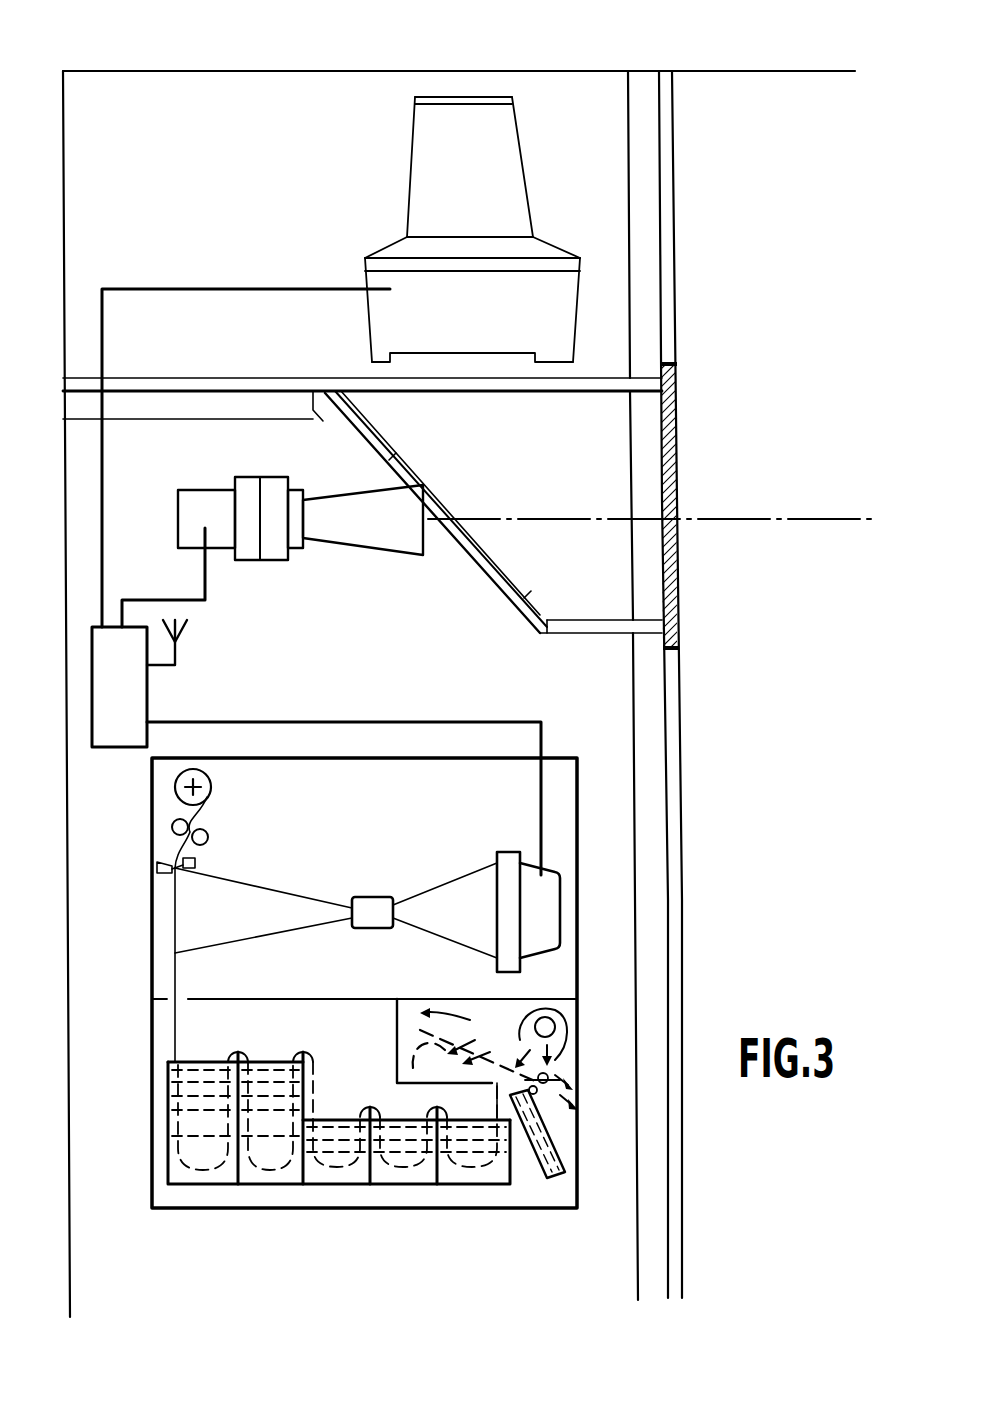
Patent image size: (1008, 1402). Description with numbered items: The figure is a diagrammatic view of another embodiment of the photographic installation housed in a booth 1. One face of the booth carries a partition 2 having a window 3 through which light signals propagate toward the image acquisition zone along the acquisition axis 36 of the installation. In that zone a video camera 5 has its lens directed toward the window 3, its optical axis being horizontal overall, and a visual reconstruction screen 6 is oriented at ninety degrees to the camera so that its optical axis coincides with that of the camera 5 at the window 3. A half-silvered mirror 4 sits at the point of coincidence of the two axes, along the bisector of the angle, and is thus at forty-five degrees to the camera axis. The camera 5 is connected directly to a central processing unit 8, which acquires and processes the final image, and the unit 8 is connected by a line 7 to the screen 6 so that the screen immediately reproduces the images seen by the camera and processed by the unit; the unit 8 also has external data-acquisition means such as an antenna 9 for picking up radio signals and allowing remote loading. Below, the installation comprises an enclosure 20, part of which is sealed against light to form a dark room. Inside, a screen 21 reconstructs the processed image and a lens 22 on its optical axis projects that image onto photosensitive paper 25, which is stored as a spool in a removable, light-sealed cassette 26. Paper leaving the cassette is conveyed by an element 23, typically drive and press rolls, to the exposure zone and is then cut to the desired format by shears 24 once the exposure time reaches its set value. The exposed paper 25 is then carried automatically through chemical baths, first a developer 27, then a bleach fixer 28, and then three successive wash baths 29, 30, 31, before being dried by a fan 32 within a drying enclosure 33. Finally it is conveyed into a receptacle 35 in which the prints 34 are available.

The booth 1 is at (787, 71).
The partition 2 is at (675, 898).
The window 3 is at (672, 460).
The half-silvered mirror 4 is at (520, 580).
The video camera 5 is at (208, 505).
The visual reconstruction screen 6 is at (432, 170).
The line 7 is at (277, 289).
The central processing unit 8 is at (152, 690).
The antenna 9 is at (183, 650).
The enclosure 20 is at (297, 1212).
The screen 21 is at (545, 920).
The lens 22 is at (373, 907).
The conveying element 23 is at (213, 836).
The shears 24 is at (212, 867).
The photosensitive paper 25 is at (175, 927).
The cassette 26 is at (178, 798).
The developer 27 is at (188, 1185).
The bleach fixer 28 is at (255, 1185).
The wash bath 29 is at (357, 1185).
The wash bath 30 is at (390, 1185).
The wash bath 31 is at (497, 1185).
The fan 32 is at (575, 1020).
The drying enclosure 33 is at (572, 1078).
The prints 34 is at (548, 1126).
The receptacle 35 is at (570, 1142).
The acquisition axis 36 is at (827, 519).